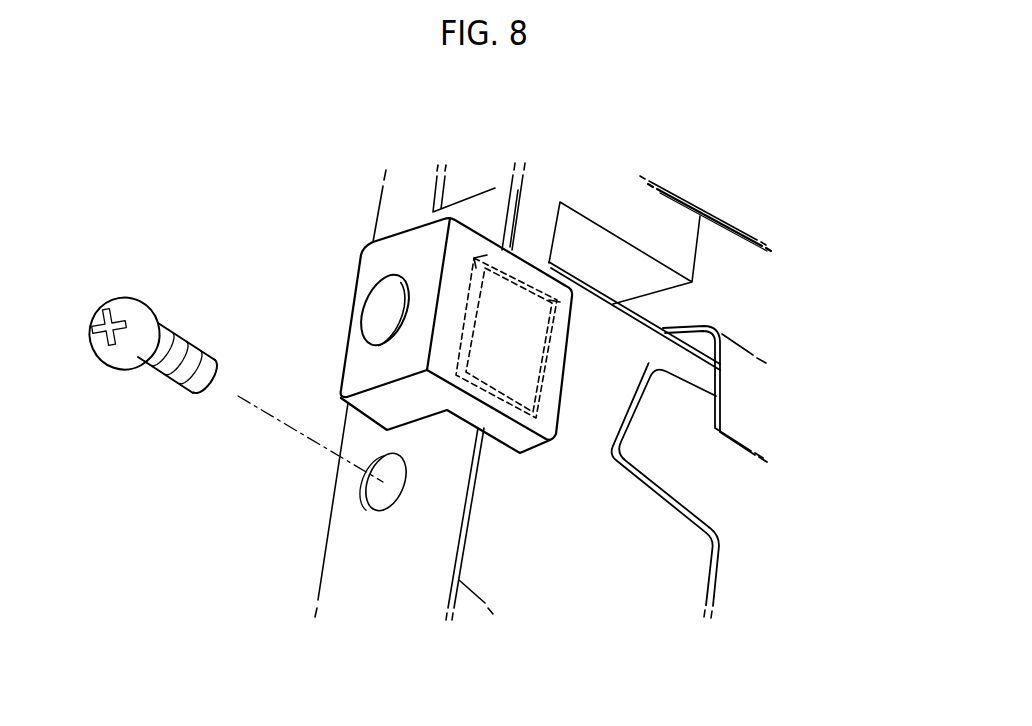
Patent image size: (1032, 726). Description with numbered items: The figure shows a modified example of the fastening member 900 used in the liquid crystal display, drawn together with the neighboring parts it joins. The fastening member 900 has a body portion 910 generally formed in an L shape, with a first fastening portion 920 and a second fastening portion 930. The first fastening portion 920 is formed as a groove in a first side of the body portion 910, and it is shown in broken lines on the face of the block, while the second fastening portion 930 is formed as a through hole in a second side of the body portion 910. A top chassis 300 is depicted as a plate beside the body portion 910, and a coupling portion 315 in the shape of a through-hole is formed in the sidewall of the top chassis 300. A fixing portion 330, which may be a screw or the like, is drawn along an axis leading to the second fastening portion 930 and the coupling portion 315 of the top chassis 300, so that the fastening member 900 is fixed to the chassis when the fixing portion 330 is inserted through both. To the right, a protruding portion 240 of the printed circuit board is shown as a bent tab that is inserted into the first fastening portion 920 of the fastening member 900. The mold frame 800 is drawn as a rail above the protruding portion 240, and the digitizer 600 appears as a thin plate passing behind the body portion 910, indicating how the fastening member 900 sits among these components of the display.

The protruding portion 240 is at (698, 462).
The top chassis 300 is at (347, 555).
The coupling portion 315 is at (375, 490).
The fixing portion 330 is at (134, 303).
The digitizer 600 is at (508, 575).
The mold frame 800 is at (679, 217).
The fastening member 900 is at (389, 335).
The body portion 910 is at (378, 370).
The first fastening portion 920 is at (543, 357).
The second fastening portion 930 is at (378, 305).